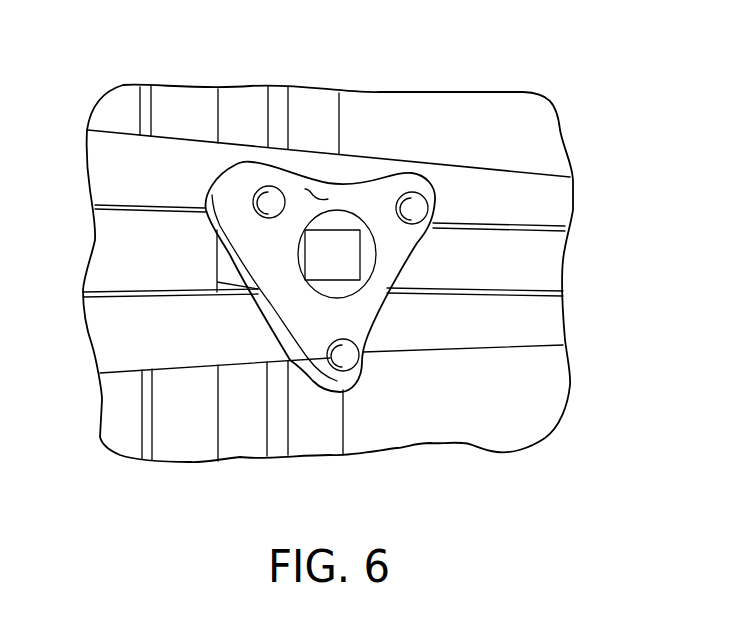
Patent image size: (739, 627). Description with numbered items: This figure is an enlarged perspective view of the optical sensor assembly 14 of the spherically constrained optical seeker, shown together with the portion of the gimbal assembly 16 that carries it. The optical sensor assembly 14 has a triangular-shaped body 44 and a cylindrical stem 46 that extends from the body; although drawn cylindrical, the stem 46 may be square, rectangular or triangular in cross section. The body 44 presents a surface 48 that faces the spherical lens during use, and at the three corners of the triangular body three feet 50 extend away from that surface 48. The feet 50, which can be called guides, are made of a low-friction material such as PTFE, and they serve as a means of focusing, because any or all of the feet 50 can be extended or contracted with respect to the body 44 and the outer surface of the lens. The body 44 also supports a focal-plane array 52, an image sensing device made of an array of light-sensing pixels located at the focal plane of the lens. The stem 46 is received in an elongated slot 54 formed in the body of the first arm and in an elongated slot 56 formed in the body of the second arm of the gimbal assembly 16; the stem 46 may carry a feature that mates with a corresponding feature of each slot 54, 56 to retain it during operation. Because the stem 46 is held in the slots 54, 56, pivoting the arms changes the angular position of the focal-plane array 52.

The optical sensor assembly 14 is at (375, 166).
The gimbal assembly 16 is at (99, 402).
The triangular-shaped body 44 is at (303, 313).
The cylindrical stem 46 is at (228, 262).
The surface 48 is at (322, 183).
The feet 50 is at (268, 196).
The focal-plane array 52 is at (345, 260).
The slot 54 is at (273, 427).
The slot 56 is at (507, 313).